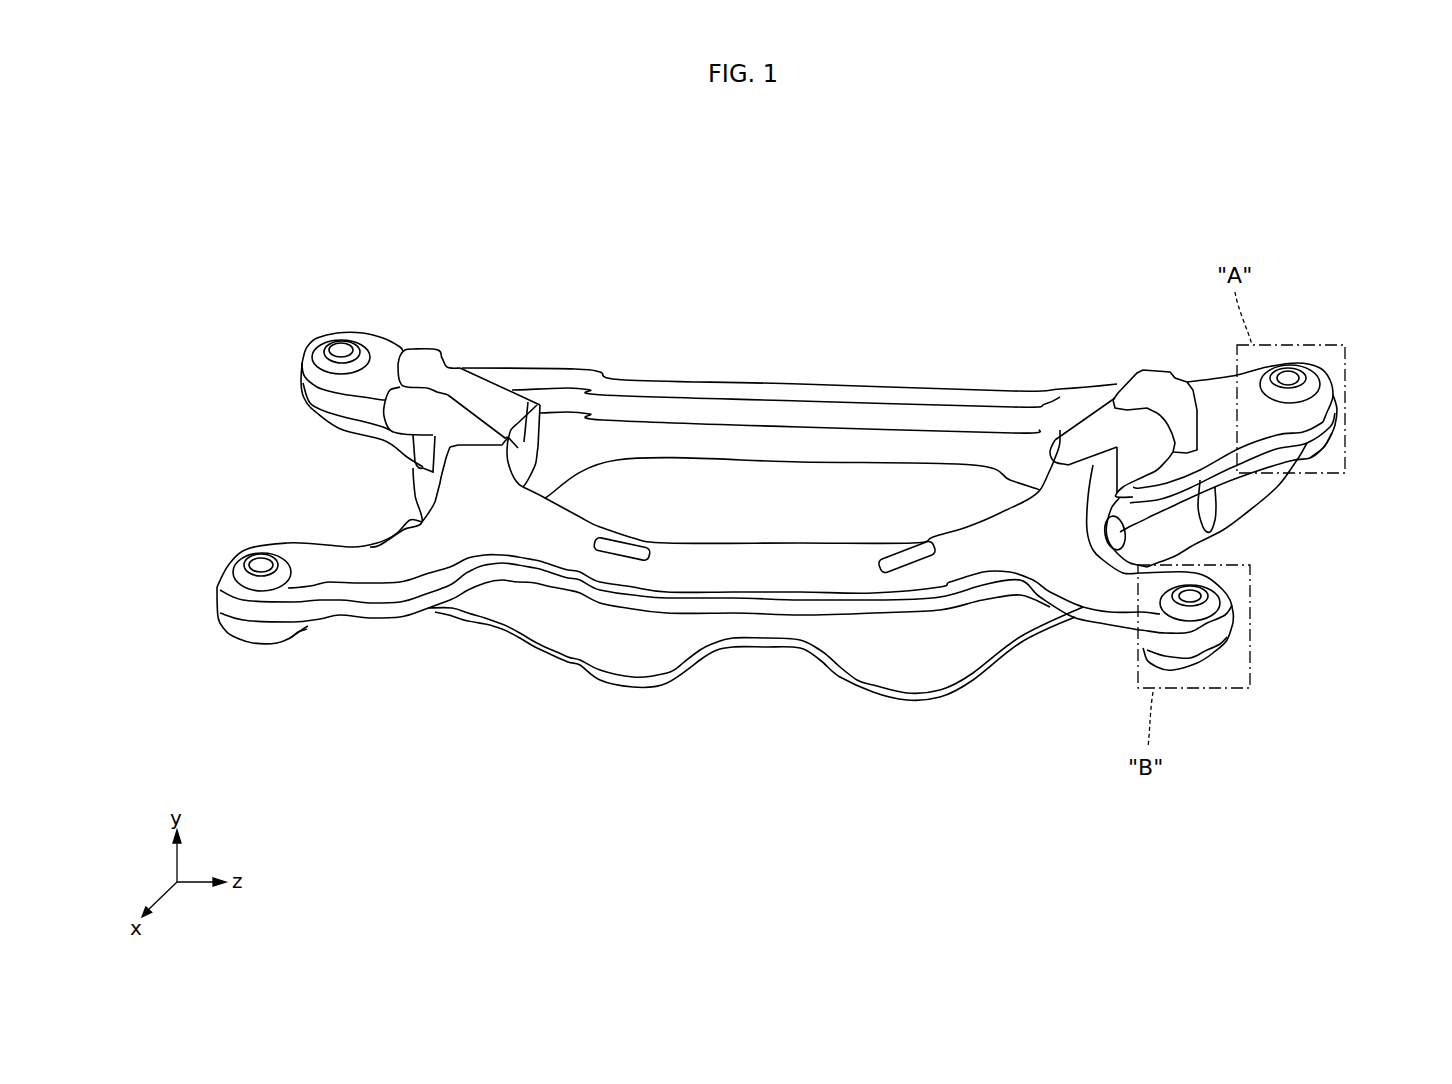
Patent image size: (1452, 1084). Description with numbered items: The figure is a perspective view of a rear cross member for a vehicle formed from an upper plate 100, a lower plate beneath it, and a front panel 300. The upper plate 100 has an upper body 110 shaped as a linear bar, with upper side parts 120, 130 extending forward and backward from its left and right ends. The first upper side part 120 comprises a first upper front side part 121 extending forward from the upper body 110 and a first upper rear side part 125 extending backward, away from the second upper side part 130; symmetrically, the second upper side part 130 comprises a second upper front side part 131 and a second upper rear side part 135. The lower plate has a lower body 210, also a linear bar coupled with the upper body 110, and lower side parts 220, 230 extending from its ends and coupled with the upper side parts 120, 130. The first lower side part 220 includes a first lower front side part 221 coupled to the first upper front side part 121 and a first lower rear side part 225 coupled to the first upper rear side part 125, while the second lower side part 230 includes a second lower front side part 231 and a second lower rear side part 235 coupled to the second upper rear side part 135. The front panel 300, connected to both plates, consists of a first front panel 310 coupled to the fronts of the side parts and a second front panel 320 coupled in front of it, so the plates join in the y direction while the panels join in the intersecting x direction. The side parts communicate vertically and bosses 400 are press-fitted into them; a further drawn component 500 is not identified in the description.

The upper plate 100 is at (553, 550).
The upper body 110 is at (673, 567).
The first upper side part 120 is at (279, 217).
The first upper front side part 121 is at (387, 360).
The first upper rear side part 125 is at (223, 580).
The second upper side part 130 is at (1436, 411).
The second upper front side part 131 is at (1327, 410).
The second upper rear side part 135 is at (1227, 622).
The lower body 210 is at (873, 610).
The first lower side part 220 is at (365, 749).
The first lower front side part 221 is at (330, 417).
The first lower rear side part 225 is at (238, 630).
The second lower side part 230 is at (1293, 817).
The second lower front side part 231 is at (1190, 547).
The second lower rear side part 235 is at (1217, 655).
The front panel 300 is at (789, 333).
The first front panel 310 is at (852, 270).
The second front panel 320 is at (830, 393).
The boss 400 is at (327, 343).
The damper mounting bracket 500 is at (1158, 395).